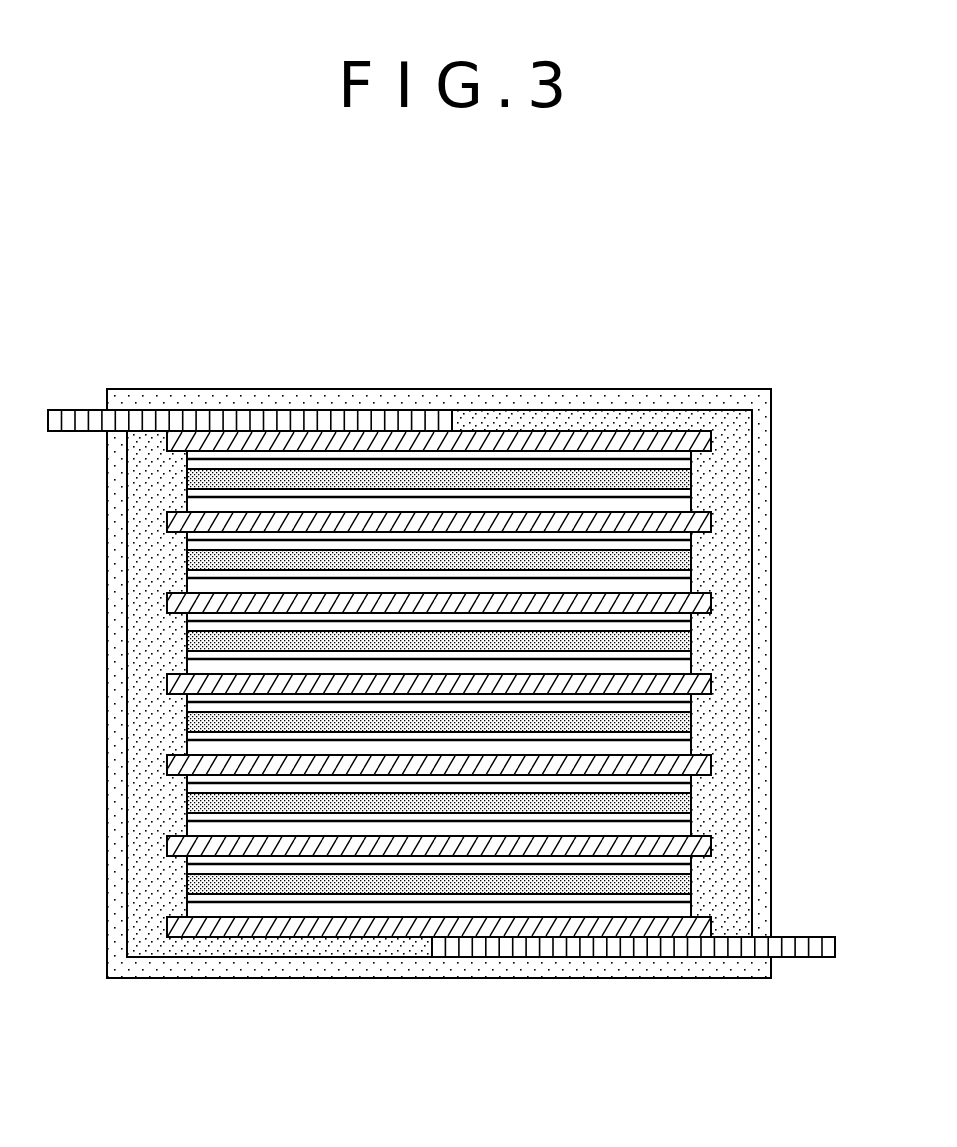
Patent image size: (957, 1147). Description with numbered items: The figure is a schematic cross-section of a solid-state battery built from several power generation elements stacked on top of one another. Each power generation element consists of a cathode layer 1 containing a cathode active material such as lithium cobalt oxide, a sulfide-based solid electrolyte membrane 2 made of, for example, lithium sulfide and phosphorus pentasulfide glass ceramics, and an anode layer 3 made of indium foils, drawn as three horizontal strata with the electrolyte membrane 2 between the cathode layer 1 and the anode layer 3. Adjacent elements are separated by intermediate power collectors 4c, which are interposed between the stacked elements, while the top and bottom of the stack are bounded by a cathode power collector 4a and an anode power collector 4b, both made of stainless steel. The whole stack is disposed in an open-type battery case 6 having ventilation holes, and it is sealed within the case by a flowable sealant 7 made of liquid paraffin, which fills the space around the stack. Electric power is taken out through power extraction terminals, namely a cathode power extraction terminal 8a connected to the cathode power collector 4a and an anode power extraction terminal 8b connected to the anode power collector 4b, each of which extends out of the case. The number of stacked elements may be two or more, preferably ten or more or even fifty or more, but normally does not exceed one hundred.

The cathode layer 1 is at (691, 459).
The sulfide-based solid electrolyte membrane 2 is at (691, 478).
The anode layer 3 is at (691, 497).
The cathode power collector 4a is at (711, 440).
The anode power collector 4b is at (711, 926).
The intermediate power collector 4c is at (711, 521).
The battery case 6 is at (553, 400).
The flowable sealant 7 is at (612, 420).
The cathode power extraction terminal 8a is at (325, 420).
The anode power extraction terminal 8b is at (653, 947).